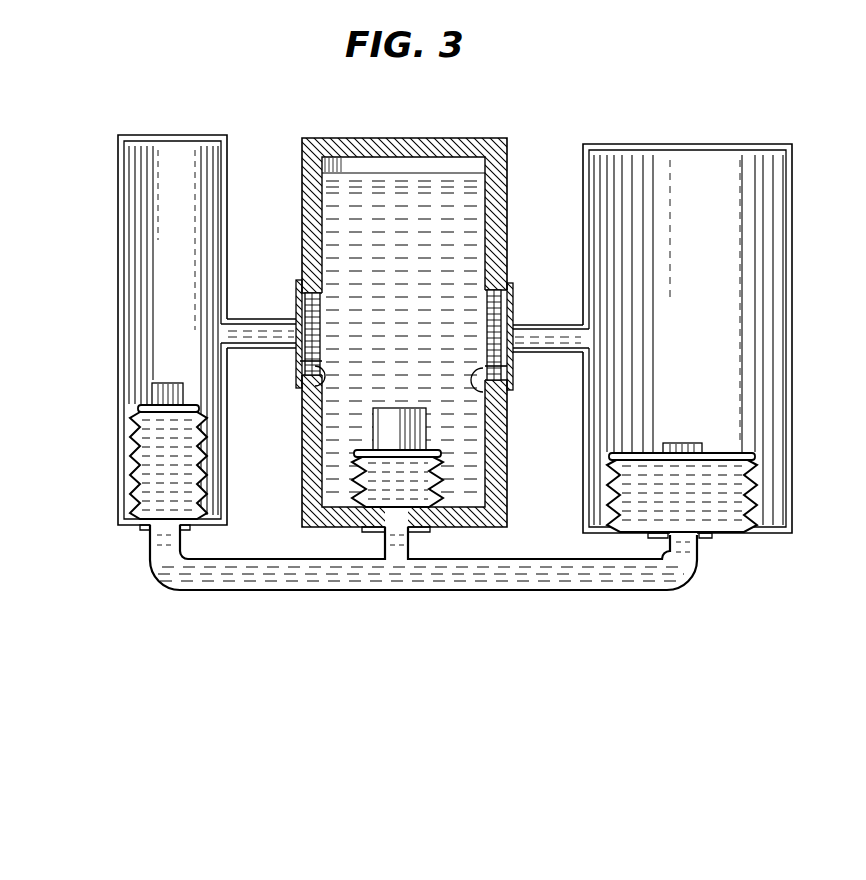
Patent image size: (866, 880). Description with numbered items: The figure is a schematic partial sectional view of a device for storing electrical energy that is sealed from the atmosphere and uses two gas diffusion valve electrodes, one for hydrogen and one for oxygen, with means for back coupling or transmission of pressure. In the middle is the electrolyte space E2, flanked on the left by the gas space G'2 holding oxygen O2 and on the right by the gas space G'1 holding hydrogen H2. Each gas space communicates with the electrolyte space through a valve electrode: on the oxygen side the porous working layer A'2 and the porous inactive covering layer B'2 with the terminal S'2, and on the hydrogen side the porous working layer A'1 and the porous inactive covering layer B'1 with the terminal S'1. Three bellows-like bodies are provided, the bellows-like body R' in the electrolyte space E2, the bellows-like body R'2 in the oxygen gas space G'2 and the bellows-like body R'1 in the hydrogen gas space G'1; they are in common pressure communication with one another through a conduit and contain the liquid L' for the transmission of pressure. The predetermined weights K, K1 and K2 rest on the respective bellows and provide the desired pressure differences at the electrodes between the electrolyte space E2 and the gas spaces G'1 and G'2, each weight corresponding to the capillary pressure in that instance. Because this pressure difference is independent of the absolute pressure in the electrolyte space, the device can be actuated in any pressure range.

The oxygen O2 is at (173, 330).
The gas space of the oxygen electrode G'2 is at (146, 332).
The porous working layer of the oxygen electrode A'2 is at (277, 329).
The terminal of the oxygen electrode S'2 is at (276, 371).
The porous inactive covering layer of the oxygen electrode B'2 is at (289, 365).
The predetermined weight K2 is at (155, 397).
The bellows-like body R'2 is at (136, 462).
The electrolyte space E2 is at (471, 214).
The predetermined weight K is at (397, 412).
The bellows-like body R' is at (383, 503).
The liquid L' is at (423, 572).
The porous working layer of the hydrogen electrode A'1 is at (524, 335).
The terminal of the hydrogen electrode S'1 is at (524, 376).
The porous inactive covering layer of the hydrogen electrode B'1 is at (508, 359).
The hydrogen H2 is at (688, 340).
The gas space of the hydrogen electrode G'1 is at (712, 341).
The predetermined weight K1 is at (680, 443).
The bellows-like body R'1 is at (720, 492).